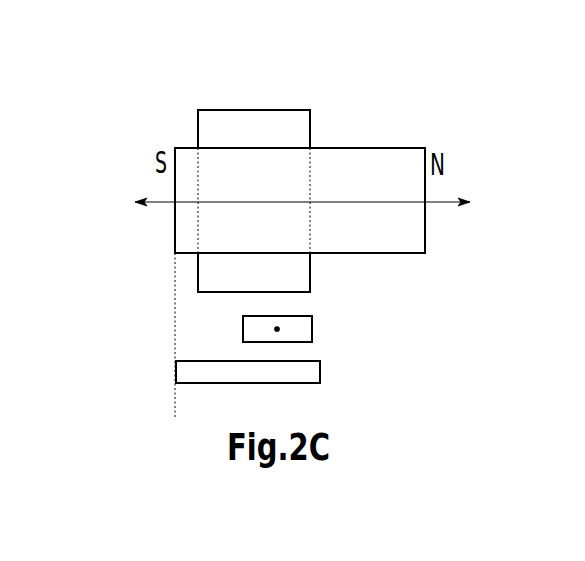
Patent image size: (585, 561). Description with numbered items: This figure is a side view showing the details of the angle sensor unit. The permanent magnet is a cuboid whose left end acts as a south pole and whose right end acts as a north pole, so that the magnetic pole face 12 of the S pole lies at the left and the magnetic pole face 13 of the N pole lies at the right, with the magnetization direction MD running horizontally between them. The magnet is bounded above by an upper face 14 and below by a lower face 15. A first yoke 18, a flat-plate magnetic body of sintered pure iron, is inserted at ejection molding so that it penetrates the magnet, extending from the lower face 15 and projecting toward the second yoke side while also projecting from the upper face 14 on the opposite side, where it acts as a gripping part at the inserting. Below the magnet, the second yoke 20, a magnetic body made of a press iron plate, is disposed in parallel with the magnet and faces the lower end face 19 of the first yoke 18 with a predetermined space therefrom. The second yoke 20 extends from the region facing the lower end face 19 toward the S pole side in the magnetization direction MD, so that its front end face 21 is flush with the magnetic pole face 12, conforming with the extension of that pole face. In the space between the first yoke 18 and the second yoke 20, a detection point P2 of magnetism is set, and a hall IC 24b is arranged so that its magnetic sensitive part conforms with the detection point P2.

The magnetic pole face 12 is at (175, 233).
The magnetic pole face 13 is at (426, 222).
The upper face 14 is at (383, 147).
The lower face 15 is at (404, 255).
The first yoke 18 is at (225, 108).
The lower end face 19 is at (213, 293).
The second yoke 20 is at (318, 372).
The front end face 21 is at (175, 370).
The hall IC 24b is at (312, 317).
The detection point P2 is at (279, 329).
The magnetization direction MD is at (283, 197).